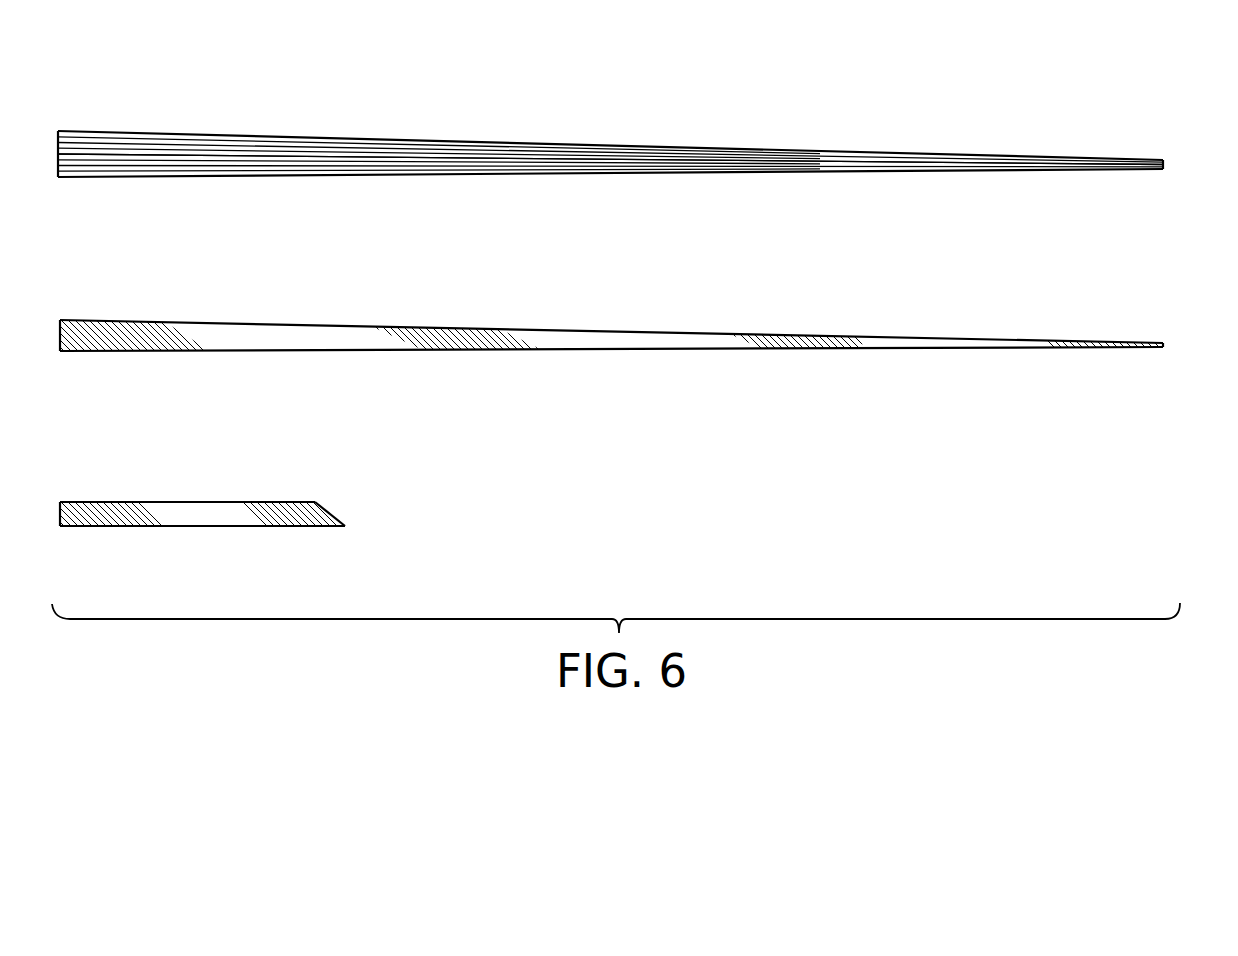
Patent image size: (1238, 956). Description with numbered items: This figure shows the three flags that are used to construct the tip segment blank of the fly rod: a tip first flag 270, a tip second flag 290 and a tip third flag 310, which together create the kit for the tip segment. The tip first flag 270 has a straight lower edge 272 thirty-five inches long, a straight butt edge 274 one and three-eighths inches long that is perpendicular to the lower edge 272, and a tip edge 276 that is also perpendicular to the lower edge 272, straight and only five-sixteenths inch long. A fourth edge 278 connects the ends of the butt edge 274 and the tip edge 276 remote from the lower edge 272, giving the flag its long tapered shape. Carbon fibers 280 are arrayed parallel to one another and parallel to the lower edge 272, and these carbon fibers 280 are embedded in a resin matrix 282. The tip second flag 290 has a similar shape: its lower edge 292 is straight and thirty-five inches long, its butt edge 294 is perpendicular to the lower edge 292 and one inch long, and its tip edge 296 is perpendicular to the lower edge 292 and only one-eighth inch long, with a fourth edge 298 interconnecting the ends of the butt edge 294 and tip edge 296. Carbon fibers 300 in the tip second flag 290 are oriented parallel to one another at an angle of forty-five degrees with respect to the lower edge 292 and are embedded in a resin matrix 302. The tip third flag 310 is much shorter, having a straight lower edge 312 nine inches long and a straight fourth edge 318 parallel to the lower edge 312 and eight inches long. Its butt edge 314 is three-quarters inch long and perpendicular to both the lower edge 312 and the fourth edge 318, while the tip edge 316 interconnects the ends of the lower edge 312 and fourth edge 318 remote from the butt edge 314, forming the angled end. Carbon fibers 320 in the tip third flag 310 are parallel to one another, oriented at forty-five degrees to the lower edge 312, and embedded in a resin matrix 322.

The tip first flag 270 is at (608, 161).
The lower edge 272 is at (706, 174).
The butt edge 274 is at (57, 150).
The tip edge 276 is at (1165, 163).
The fourth edge 278 is at (428, 136).
The carbon fibers 280 is at (115, 160).
The resin matrix 282 is at (283, 160).
The tip second flag 290 is at (609, 338).
The lower edge 292 is at (708, 353).
The butt edge 294 is at (59, 333).
The tip edge 296 is at (1165, 344).
The fourth edge 298 is at (428, 325).
The carbon fibers 300 is at (118, 336).
The resin matrix 302 is at (285, 336).
The tip third flag 310 is at (210, 512).
The lower edge 312 is at (272, 528).
The butt edge 314 is at (59, 515).
The tip edge 316 is at (328, 511).
The fourth edge 318 is at (228, 501).
The carbon fibers 320 is at (110, 519).
The resin matrix 322 is at (186, 519).